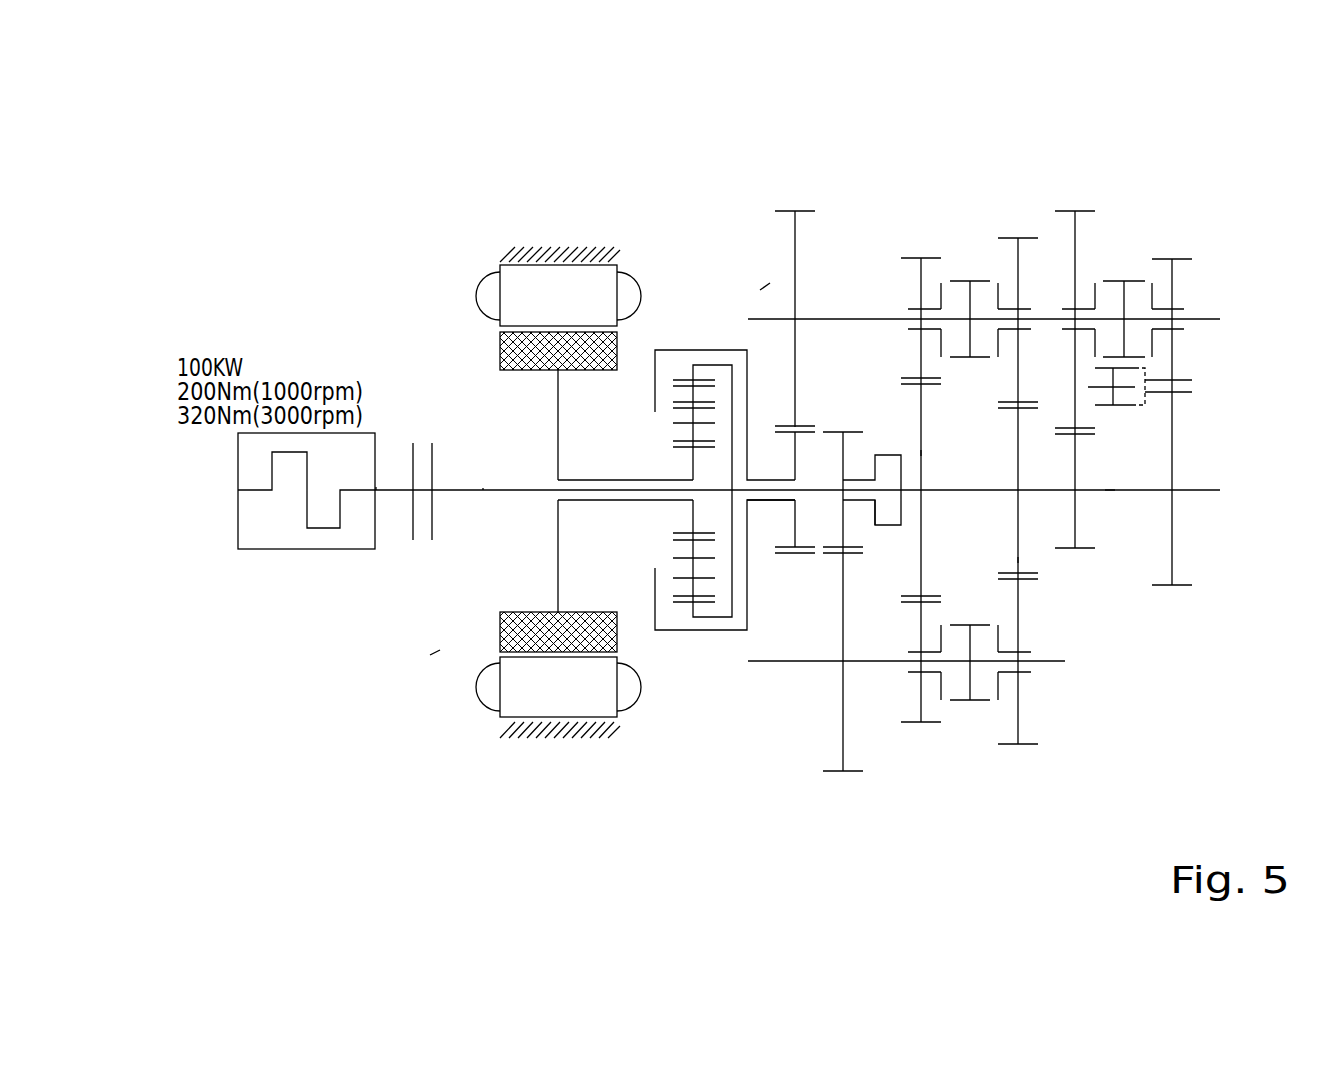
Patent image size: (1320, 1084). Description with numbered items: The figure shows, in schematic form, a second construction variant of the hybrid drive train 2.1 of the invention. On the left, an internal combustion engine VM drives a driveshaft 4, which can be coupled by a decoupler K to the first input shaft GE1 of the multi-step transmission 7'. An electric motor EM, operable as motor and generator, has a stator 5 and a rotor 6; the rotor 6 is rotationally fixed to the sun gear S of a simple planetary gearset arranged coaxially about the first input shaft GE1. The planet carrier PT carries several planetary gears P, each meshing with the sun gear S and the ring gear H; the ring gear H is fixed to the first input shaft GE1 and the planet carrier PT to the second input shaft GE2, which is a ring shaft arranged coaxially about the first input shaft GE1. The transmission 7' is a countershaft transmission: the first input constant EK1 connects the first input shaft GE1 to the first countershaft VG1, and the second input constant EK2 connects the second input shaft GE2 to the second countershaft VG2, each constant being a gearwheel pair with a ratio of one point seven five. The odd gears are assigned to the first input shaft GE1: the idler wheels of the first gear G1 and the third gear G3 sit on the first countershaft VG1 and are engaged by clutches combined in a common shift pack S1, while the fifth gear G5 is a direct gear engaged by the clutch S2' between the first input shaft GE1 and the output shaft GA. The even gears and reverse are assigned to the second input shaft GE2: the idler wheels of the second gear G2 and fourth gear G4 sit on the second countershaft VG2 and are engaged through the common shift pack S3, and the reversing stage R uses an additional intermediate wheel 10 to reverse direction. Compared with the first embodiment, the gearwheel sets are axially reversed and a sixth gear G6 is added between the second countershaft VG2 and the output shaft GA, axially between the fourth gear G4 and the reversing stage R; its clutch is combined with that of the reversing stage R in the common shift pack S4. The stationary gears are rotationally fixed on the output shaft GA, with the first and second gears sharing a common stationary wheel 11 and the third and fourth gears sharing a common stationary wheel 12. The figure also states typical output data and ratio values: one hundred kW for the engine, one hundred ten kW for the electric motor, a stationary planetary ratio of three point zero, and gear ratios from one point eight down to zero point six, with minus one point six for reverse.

The internal combustion engine VM is at (275, 508).
The decoupler K is at (418, 553).
The driveshaft 4 is at (376, 488).
The first input shaft GE1 is at (483, 489).
The electric motor EM is at (467, 419).
The stator 5 is at (518, 290).
The rotor 6 is at (515, 347).
The planet carrier PT is at (482, 484).
The ring gear H is at (718, 617).
The sun gear S is at (683, 510).
The planetary gears P is at (683, 548).
The transmission 7' is at (746, 195).
The hybrid drive train 2.1 is at (430, 655).
The second input constant EK2 is at (796, 178).
The second input shaft GE2 is at (755, 500).
The first input constant EK1 is at (830, 683).
The fifth gear G5 is at (887, 567).
The clutch S2' is at (922, 684).
The second gear G2 is at (921, 222).
The first gear G1 is at (940, 757).
The common stationary wheel 11 is at (922, 453).
The shift pack S3 is at (968, 364).
The shift pack S1 is at (968, 616).
The fourth gear G4 is at (1018, 200).
The third gear G3 is at (1040, 770).
The common stationary wheel 12 is at (1018, 560).
The sixth gear G6 is at (1073, 180).
The shift pack S4 is at (1123, 272).
The reversing stage R is at (1174, 222).
The intermediate wheel 10 is at (1115, 405).
The output shaft GA is at (1110, 490).
The second countershaft VG2 is at (838, 319).
The first countershaft VG1 is at (1065, 661).